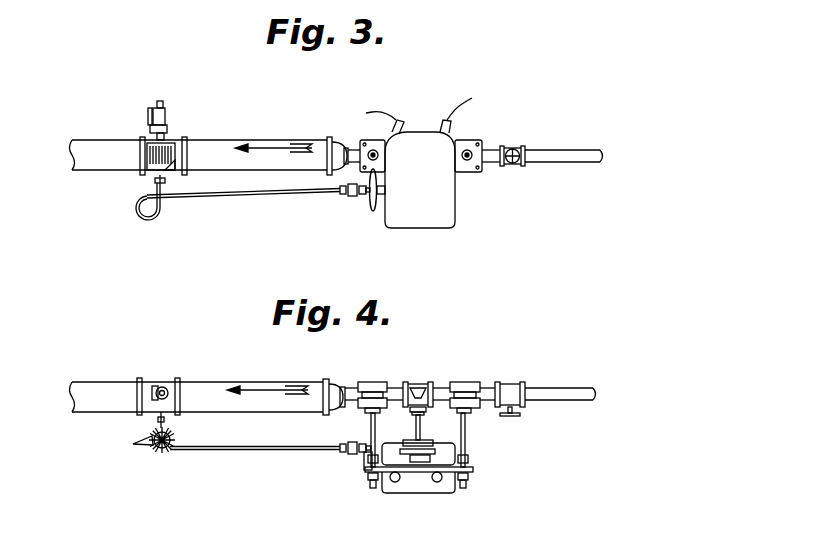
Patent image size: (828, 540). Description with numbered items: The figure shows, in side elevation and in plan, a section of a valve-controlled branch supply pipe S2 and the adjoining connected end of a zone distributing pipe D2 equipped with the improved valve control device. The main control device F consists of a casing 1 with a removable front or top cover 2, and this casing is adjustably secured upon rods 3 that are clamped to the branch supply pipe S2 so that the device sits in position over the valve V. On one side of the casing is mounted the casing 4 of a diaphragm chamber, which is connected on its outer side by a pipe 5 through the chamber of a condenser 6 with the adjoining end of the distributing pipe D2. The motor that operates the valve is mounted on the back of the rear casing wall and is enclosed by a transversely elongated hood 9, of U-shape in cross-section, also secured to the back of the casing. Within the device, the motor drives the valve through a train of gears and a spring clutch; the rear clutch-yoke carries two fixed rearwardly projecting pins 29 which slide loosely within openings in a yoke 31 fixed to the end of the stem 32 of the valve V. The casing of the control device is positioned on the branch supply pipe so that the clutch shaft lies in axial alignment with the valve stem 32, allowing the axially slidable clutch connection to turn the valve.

In FIG. 3, the casing 1 is at (458, 196).
In FIG. 4, the casing 1 is at (447, 481).
In FIG. 3, the removable front or top cover 2 is at (432, 215).
In FIG. 4, the removable front or top cover 2 is at (437, 495).
In FIG. 3, the rods 3 is at (372, 150).
In FIG. 4, the rods 3 is at (371, 426).
In FIG. 3, the casing of diaphragm chamber 4 is at (370, 204).
In FIG. 4, the casing of diaphragm chamber 4 is at (366, 455).
In FIG. 3, the pipe 5 is at (268, 192).
In FIG. 4, the pipe 5 is at (252, 450).
In FIG. 3, the condenser 6 is at (160, 158).
In FIG. 4, the condenser 6 is at (153, 437).
In FIG. 4, the hood 9 is at (448, 455).
In FIG. 4, the pins 29 is at (378, 462).
In FIG. 4, the yoke 31 is at (407, 443).
In FIG. 4, the valve stem 32 is at (421, 426).
In FIG. 3, the distributing pipe D2 is at (217, 152).
In FIG. 4, the distributing pipe D2 is at (212, 390).
In FIG. 3, the branch supply pipe S2 is at (560, 153).
In FIG. 4, the branch supply pipe S2 is at (557, 391).
In FIG. 3, the main control device F is at (417, 173).
In FIG. 4, the main control device F is at (417, 507).
In FIG. 4, the valve V is at (415, 390).